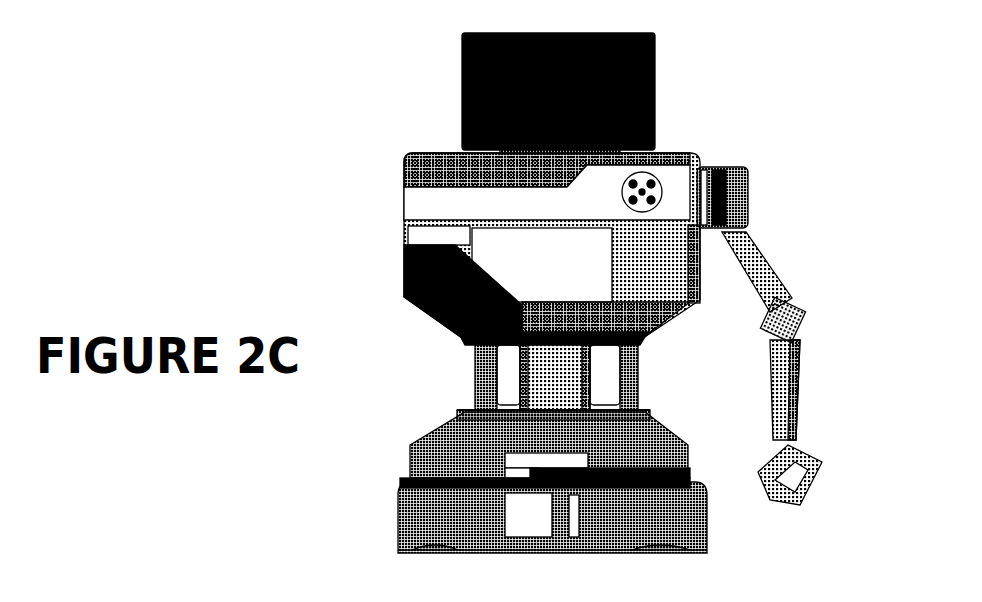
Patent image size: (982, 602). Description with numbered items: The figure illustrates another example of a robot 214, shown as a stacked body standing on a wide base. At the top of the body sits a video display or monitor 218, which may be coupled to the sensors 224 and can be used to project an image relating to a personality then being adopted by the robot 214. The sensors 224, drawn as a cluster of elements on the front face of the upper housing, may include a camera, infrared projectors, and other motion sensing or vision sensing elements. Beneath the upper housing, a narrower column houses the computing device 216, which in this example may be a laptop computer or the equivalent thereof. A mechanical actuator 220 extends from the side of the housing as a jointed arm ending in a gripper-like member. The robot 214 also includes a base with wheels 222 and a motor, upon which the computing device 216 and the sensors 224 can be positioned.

The robot 214 is at (358, 123).
The computing device 216 is at (517, 375).
The video display or monitor 218 is at (640, 70).
The mechanical actuator 220 is at (790, 367).
The wheels 222 is at (455, 550).
The sensors 224 is at (662, 192).